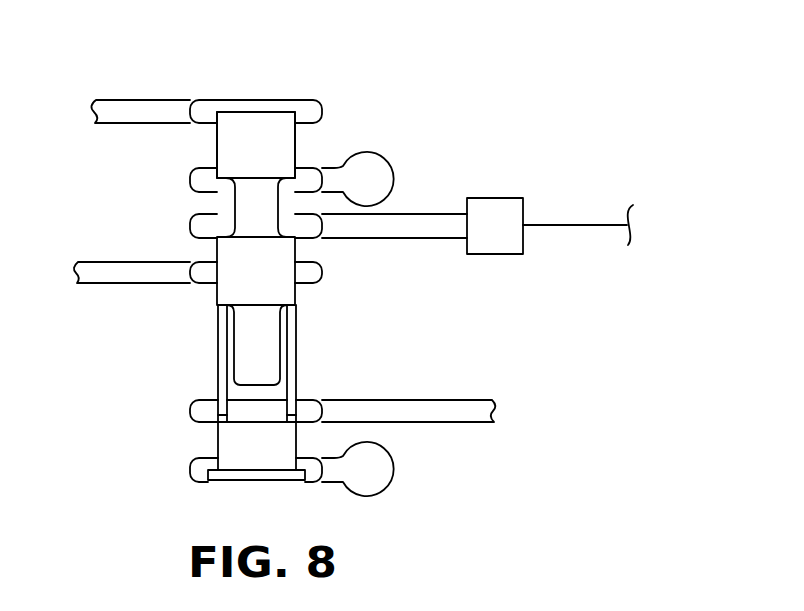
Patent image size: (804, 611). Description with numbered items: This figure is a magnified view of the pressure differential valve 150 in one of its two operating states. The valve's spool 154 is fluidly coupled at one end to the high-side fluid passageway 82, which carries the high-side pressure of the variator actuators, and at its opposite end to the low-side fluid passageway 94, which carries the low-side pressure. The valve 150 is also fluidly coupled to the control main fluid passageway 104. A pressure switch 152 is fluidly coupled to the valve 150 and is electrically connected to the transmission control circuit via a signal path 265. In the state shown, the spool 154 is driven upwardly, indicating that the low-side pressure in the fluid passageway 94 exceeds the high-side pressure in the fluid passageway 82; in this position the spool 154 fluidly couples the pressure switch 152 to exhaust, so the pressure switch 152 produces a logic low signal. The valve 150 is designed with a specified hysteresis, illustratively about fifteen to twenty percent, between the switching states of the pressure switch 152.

The pressure differential valve 150 is at (470, 73).
The fluid path 82 is at (135, 100).
The spool 154 is at (217, 140).
The control main fluid passageway 104 is at (137, 285).
The fluid path 94 is at (403, 400).
The pressure switch 152 is at (497, 197).
The signal path 265 is at (570, 225).